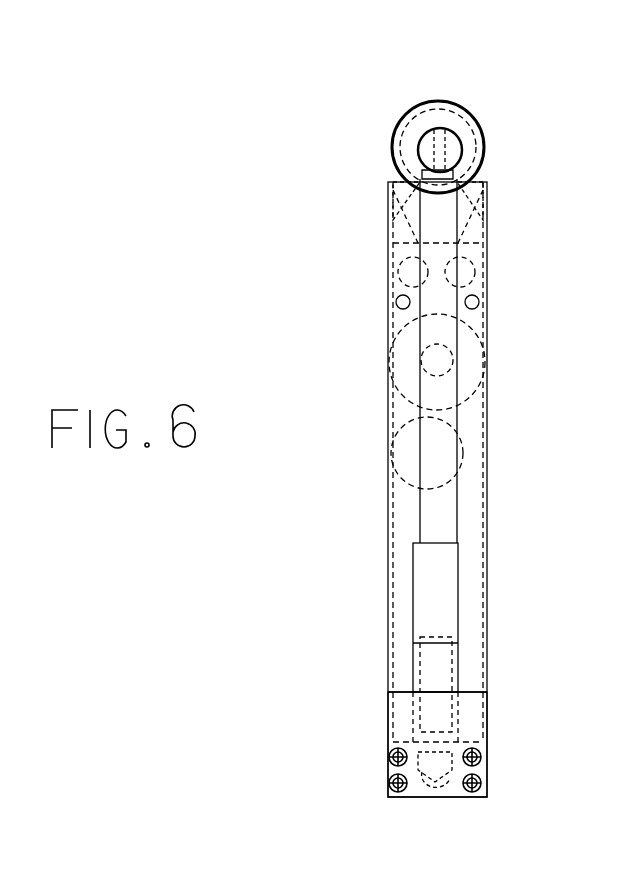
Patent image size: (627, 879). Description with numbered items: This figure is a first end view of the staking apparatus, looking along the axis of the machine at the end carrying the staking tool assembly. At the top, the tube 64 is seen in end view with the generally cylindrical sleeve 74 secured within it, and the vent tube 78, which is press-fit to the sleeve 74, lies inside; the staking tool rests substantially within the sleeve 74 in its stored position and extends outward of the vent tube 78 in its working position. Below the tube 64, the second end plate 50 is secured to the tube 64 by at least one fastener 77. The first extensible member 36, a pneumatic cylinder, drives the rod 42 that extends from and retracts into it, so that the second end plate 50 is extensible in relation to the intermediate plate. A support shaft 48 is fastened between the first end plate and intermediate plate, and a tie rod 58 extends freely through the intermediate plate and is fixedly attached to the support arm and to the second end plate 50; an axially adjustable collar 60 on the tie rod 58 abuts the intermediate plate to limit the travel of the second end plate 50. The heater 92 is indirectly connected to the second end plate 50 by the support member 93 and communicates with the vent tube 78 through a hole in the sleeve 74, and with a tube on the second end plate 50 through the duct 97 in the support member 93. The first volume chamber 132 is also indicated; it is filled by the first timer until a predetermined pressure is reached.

The tube 64 is at (404, 108).
The sleeve 74 is at (392, 132).
The vent tube 78 is at (420, 153).
The heater 92 is at (423, 241).
The support shaft 48 is at (399, 264).
The tie rod 58 is at (396, 301).
The first extensible member 36 is at (398, 332).
The rod 42 is at (421, 359).
The second end plate 50 is at (385, 505).
The duct 97 is at (413, 658).
The support member 93 is at (398, 692).
The fastener 77 is at (488, 183).
The axially adjustable collar 60 is at (487, 258).
The first volume chamber 132 is at (462, 437).